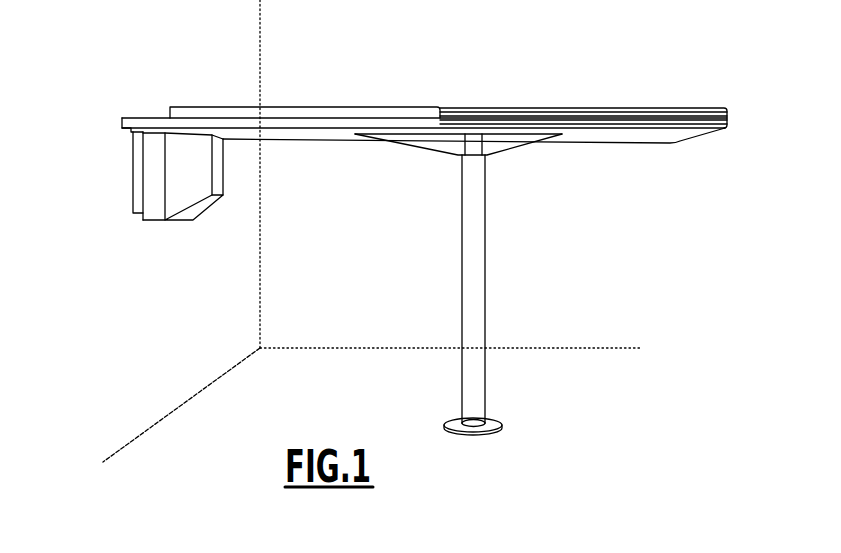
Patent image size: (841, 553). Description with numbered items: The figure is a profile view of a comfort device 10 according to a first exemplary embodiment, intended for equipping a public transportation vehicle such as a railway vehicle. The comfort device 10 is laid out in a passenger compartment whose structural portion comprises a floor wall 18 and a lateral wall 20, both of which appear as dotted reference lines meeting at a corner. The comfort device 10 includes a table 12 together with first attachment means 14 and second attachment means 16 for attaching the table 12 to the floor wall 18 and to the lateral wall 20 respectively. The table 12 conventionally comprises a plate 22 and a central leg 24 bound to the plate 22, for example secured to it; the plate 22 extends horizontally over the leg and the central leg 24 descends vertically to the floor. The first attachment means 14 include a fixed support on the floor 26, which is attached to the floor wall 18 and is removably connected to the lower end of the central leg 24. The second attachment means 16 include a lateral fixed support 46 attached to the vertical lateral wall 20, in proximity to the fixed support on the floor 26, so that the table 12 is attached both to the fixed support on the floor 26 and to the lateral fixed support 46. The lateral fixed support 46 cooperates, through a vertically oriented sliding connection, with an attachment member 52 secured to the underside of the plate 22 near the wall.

The comfort device 10 is at (392, 236).
The table 12 is at (600, 82).
The first attachment means 14 is at (461, 293).
The second attachment means 16 is at (141, 211).
The floor wall 18 is at (555, 375).
The lateral wall 20 is at (133, 328).
The plate 22 is at (518, 107).
The central leg 24 is at (472, 235).
The fixed support on the floor 26 is at (492, 432).
The lateral fixed support 46 is at (132, 167).
The attachment member 52 is at (157, 187).